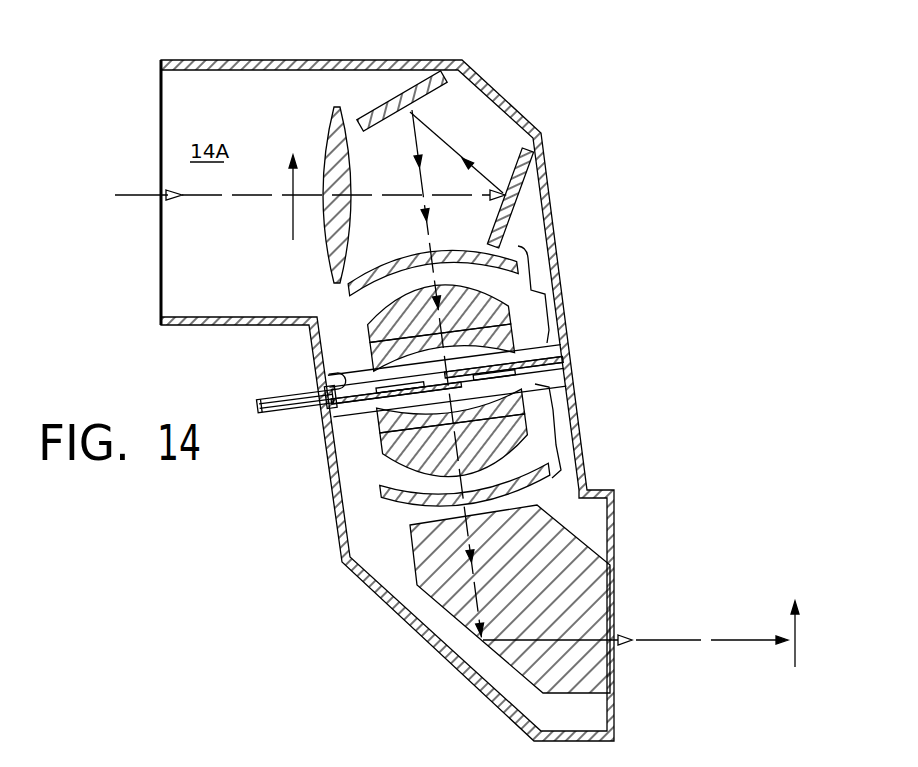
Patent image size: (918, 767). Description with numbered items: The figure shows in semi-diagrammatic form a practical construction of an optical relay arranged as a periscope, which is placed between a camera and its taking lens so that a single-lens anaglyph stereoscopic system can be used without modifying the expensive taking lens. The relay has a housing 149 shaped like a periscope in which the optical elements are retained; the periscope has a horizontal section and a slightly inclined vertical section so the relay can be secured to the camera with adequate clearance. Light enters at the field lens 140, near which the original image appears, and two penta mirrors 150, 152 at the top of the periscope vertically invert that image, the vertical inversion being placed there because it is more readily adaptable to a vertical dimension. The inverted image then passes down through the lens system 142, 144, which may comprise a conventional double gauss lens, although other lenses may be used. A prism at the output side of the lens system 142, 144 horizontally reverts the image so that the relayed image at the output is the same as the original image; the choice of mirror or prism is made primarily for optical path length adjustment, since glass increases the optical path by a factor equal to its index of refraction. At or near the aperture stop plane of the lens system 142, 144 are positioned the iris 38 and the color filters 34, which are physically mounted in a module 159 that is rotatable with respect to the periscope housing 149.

The color filters 34 is at (560, 343).
The iris 38 is at (330, 425).
The field lens 140 is at (327, 140).
The lens system 142 is at (548, 291).
The lens system 144 is at (572, 420).
The housing 149 is at (334, 549).
The penta mirror 150 is at (413, 90).
The penta mirror 152 is at (517, 200).
The module 159 is at (338, 378).